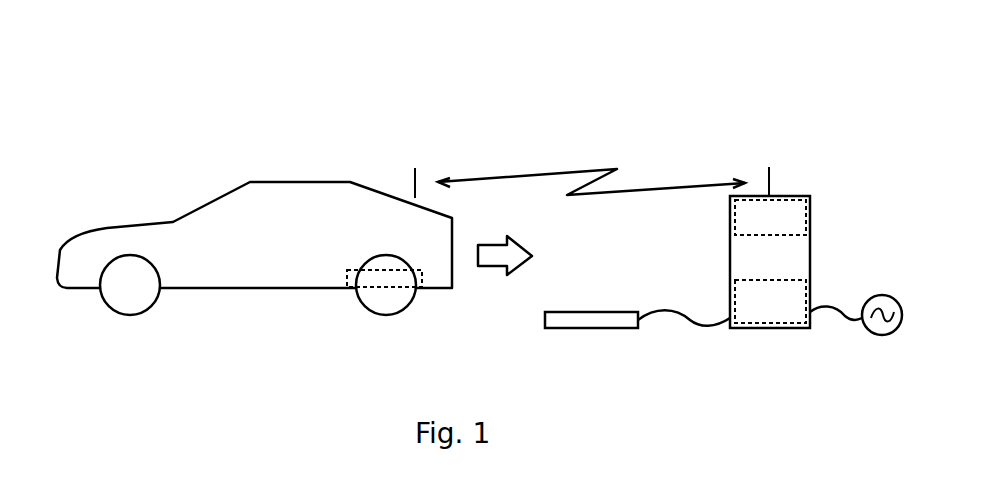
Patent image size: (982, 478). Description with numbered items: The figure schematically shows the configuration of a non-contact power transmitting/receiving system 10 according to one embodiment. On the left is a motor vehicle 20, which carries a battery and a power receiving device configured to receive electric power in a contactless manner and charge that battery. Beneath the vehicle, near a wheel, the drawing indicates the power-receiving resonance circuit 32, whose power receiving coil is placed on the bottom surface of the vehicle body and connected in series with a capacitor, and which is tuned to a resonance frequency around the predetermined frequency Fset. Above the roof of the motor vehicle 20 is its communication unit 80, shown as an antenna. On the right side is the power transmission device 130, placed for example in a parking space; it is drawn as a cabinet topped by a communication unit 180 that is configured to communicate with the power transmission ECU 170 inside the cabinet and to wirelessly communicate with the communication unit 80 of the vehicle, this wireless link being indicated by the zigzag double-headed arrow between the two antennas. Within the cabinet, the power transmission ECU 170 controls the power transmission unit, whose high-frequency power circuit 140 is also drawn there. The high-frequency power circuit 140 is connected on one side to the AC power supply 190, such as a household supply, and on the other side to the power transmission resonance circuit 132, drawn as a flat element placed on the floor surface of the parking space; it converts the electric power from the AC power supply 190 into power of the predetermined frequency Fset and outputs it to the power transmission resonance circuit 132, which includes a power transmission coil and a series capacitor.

The non-contact power transmitting/receiving system 10 is at (682, 63).
The motor vehicle 20 is at (294, 195).
The power-receiving resonance circuit 32 is at (352, 288).
The communication unit 80 is at (410, 185).
The power transmission device 130 is at (795, 155).
The power transmission resonance circuit 132 is at (597, 322).
The high-frequency power circuit 140 is at (783, 292).
The power transmission ECU 170 is at (783, 217).
The communication unit 180 is at (772, 180).
The AC power supply 190 is at (882, 335).